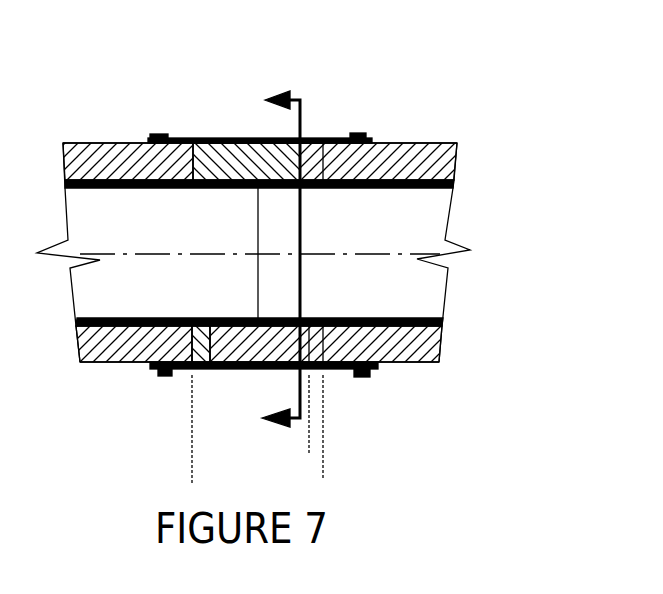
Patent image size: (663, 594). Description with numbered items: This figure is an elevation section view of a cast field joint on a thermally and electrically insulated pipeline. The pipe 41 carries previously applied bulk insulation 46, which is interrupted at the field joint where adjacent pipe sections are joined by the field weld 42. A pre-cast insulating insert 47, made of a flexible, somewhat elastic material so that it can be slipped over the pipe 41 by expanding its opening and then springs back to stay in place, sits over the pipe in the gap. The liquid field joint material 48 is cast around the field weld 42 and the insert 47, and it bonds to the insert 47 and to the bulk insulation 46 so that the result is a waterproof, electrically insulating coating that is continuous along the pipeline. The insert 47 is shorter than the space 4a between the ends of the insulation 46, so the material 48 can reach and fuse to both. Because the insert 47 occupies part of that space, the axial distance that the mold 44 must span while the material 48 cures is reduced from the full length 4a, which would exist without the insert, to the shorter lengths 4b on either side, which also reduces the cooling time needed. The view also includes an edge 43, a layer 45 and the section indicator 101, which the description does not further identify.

The pipe 41 is at (435, 178).
The field weld 42 is at (212, 368).
The tape wrap 43 is at (354, 138).
The mold 44 is at (337, 140).
The conductive layer 45 is at (244, 137).
The insulation 46 is at (127, 160).
The pre-cast insulating insert 47 is at (240, 370).
The field joint material 48 is at (193, 138).
The section line 101 is at (261, 260).
The space between the insulation 4a is at (323, 468).
The lengths 4b is at (262, 440).